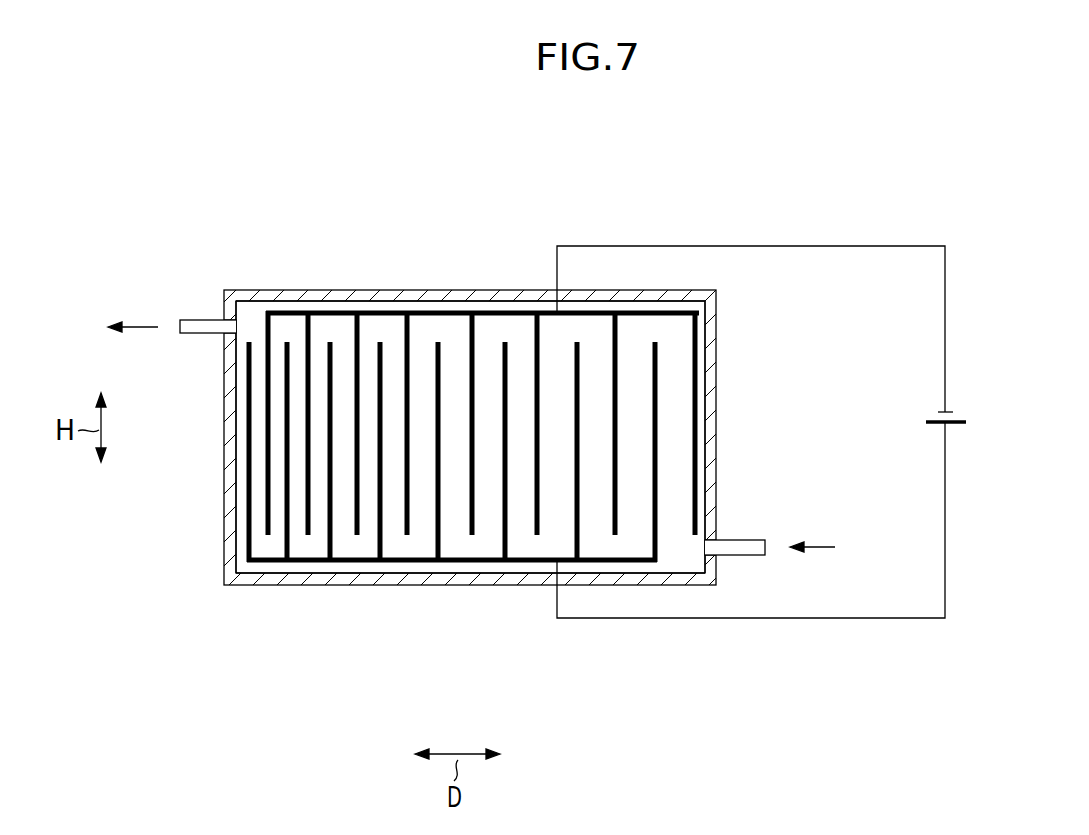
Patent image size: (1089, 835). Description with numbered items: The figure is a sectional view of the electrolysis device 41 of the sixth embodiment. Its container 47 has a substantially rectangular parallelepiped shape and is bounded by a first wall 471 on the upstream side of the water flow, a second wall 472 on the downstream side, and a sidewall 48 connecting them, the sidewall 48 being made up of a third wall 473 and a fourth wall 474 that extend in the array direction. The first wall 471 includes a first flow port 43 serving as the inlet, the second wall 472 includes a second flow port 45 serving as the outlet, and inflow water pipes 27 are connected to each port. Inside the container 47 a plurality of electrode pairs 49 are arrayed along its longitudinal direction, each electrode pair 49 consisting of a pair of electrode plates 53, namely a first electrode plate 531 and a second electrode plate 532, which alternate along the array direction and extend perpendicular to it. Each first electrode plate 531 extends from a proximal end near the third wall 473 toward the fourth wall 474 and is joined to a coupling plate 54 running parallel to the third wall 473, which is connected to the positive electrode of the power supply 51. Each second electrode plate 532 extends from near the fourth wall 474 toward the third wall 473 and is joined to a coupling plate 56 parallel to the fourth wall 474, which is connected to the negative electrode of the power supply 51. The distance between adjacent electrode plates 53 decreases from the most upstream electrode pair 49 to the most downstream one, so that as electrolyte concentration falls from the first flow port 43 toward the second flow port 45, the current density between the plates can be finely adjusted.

The electrolysis device 41 is at (210, 175).
The inflow water pipe 27 is at (200, 320).
The first flow port 43 is at (706, 547).
The second flow port 45 is at (236, 326).
The container 47 is at (650, 283).
The sidewall 48 is at (502, 436).
The first wall 471 is at (717, 318).
The second wall 472 is at (224, 546).
The third wall 473 is at (610, 585).
The fourth wall 474 is at (598, 290).
The electrode pair 49 is at (539, 436).
The power supply 51 is at (952, 430).
The electrode plate 53 is at (515, 435).
The first electrode plate 531 is at (384, 354).
The second electrode plate 532 is at (410, 343).
The coupling plate 54 is at (318, 683).
The coupling plate 56 is at (447, 312).